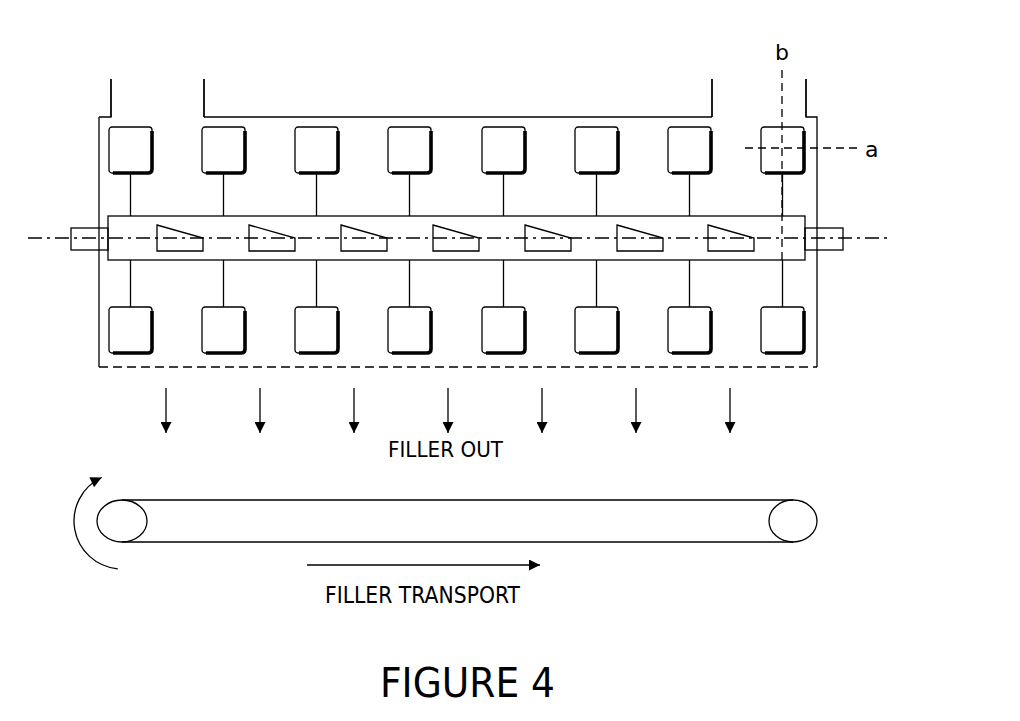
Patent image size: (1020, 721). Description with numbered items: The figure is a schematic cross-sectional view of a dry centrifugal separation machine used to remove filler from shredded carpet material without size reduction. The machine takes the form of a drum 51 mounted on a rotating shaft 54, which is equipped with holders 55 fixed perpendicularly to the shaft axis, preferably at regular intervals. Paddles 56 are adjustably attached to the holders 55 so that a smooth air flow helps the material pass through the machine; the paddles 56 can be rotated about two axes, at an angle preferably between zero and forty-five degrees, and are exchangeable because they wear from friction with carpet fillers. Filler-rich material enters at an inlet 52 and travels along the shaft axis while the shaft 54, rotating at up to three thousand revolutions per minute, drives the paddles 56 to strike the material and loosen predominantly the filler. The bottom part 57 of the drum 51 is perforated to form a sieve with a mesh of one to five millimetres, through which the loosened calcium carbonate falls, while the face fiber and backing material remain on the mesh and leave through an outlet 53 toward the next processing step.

The drum 51 is at (458, 82).
The inlet 52 is at (157, 82).
The outlet 53 is at (758, 33).
The rotating shaft 54 is at (796, 253).
The holder 55 is at (796, 283).
The paddle 56 is at (790, 325).
The bottom part 57 is at (777, 380).